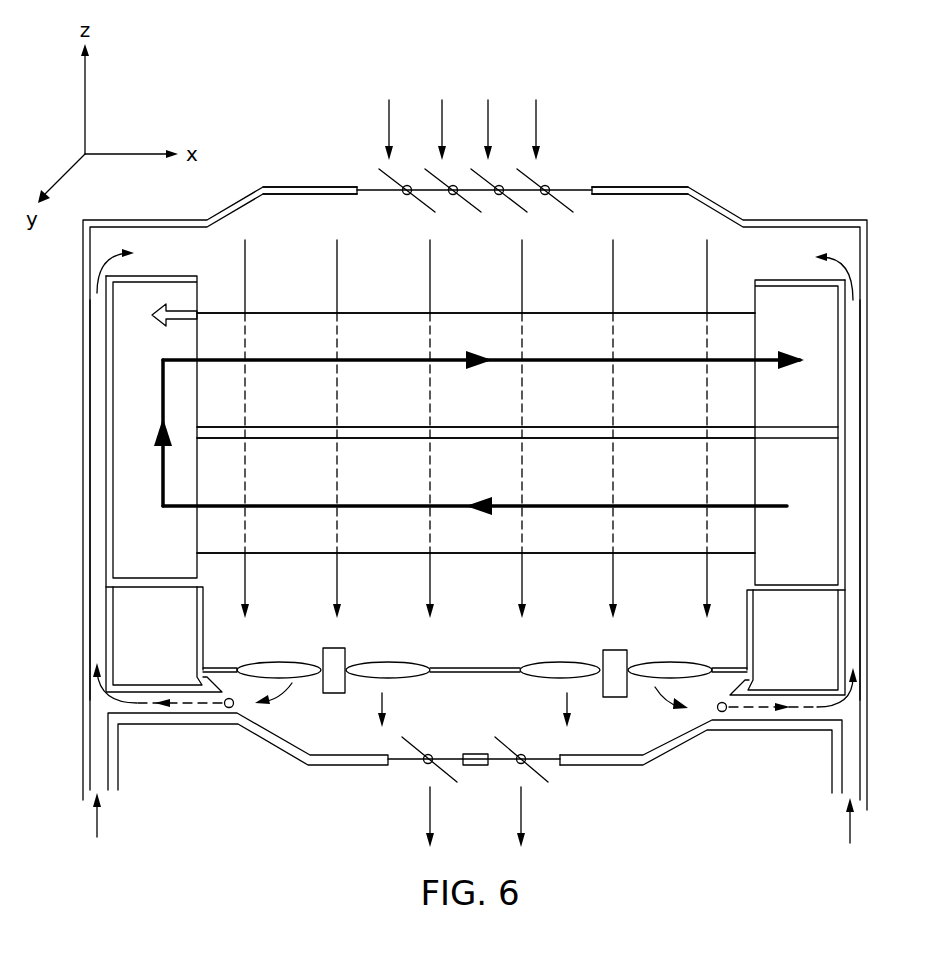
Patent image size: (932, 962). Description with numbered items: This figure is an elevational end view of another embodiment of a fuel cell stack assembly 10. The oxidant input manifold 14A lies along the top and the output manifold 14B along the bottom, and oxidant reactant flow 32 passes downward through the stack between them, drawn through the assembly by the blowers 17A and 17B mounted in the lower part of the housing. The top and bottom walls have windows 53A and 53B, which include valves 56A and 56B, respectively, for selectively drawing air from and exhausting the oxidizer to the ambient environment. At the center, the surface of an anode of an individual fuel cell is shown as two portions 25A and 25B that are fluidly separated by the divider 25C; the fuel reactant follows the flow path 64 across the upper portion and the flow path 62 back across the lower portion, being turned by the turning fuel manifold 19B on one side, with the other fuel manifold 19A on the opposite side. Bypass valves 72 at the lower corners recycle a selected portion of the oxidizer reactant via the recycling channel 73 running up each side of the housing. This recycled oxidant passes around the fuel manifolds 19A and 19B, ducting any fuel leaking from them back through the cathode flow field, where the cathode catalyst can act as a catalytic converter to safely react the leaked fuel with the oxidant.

The fuel cell stack assembly 10 is at (800, 172).
The oxidant input manifold 14A is at (227, 208).
The output manifold 14B is at (593, 767).
The blower 17A is at (608, 662).
The blower 17B is at (340, 660).
The fuel manifold 19A is at (815, 520).
The turning fuel manifold 19B is at (137, 555).
The anode surface portion 25A is at (268, 410).
The anode surface portion 25B is at (268, 484).
The divider 25C is at (215, 438).
The oxidant reactant flow 32 is at (245, 278).
The window 53A is at (360, 158).
The window 53B is at (397, 772).
The valve 56A is at (545, 185).
The valve 56B is at (517, 750).
The fuel reactant flow path 62 is at (735, 512).
The fuel reactant flow path 64 is at (733, 365).
The bypass valve 72 is at (229, 708).
The recycling channel 73 is at (98, 383).